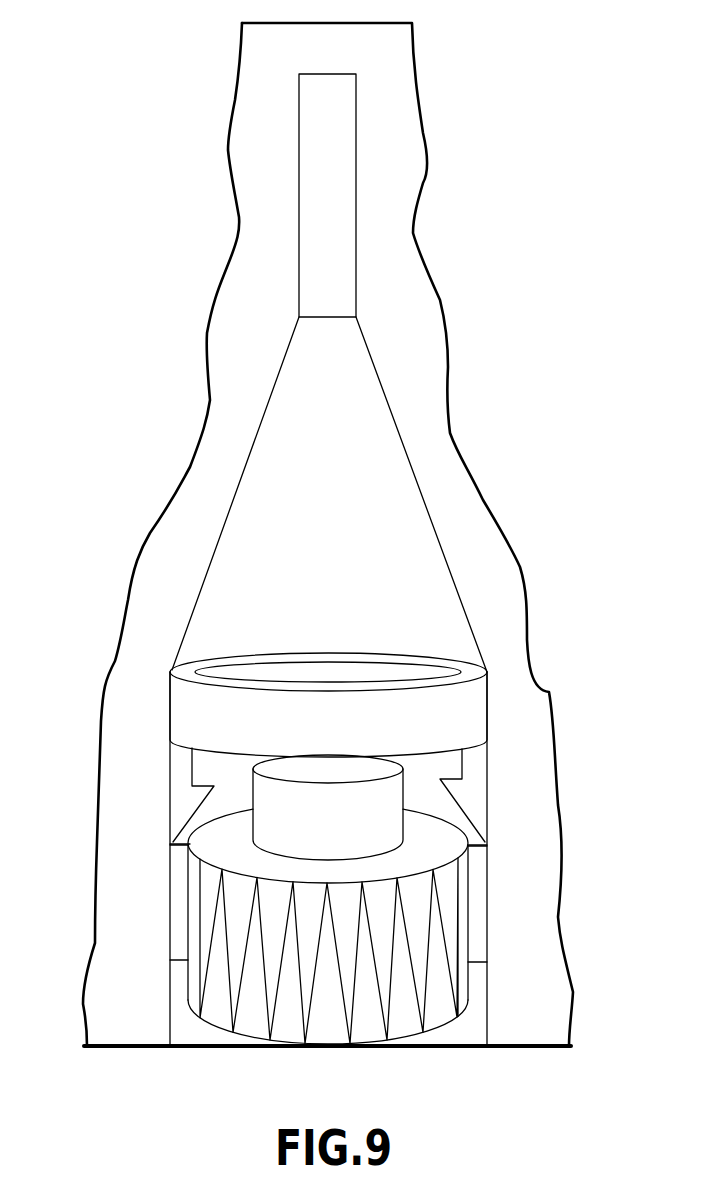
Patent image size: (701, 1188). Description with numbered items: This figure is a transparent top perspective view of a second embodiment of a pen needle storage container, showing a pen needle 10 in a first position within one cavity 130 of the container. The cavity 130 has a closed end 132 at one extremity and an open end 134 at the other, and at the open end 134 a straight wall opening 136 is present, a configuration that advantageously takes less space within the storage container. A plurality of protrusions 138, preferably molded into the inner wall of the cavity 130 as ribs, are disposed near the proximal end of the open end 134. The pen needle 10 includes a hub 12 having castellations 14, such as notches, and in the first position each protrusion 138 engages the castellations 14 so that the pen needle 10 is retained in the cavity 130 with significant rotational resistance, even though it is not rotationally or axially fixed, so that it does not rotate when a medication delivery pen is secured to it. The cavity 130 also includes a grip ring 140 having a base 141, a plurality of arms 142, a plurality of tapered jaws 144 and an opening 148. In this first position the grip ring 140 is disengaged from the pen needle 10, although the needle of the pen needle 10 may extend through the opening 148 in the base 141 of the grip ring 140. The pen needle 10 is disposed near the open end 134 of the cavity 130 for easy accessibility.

The pen needle 10 is at (393, 802).
The hub 12 is at (187, 973).
The castellations 14 is at (265, 1017).
The cavity 130 is at (333, 435).
The closed end 132 is at (335, 74).
The open end 134 is at (447, 1047).
The straight wall opening 136 is at (487, 1016).
The protrusions 138 is at (474, 928).
The grip ring 140 is at (513, 684).
The base 141 is at (210, 717).
The arms 142 is at (476, 764).
The tapered jaws 144 is at (198, 816).
The opening 148 is at (252, 673).